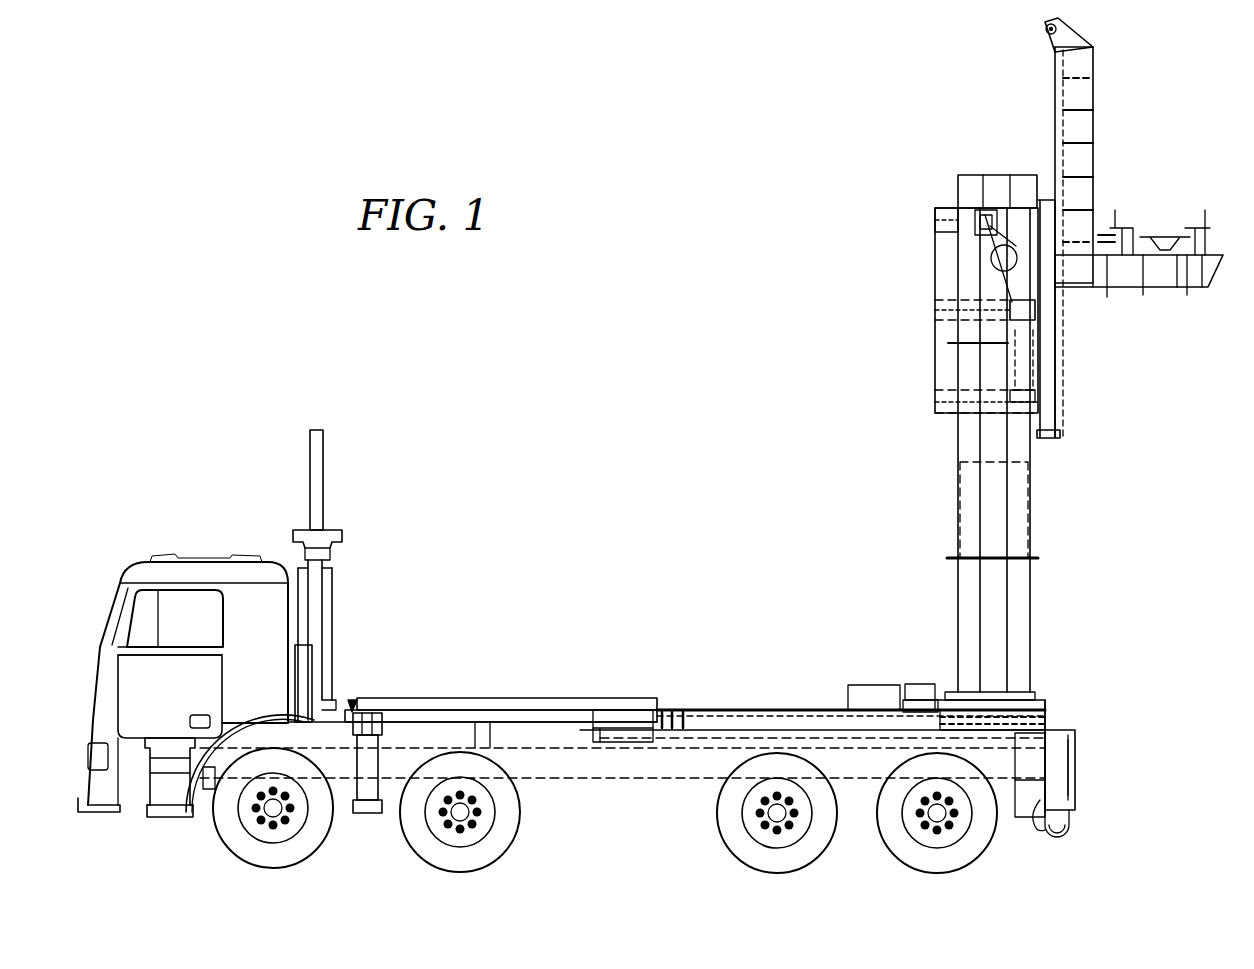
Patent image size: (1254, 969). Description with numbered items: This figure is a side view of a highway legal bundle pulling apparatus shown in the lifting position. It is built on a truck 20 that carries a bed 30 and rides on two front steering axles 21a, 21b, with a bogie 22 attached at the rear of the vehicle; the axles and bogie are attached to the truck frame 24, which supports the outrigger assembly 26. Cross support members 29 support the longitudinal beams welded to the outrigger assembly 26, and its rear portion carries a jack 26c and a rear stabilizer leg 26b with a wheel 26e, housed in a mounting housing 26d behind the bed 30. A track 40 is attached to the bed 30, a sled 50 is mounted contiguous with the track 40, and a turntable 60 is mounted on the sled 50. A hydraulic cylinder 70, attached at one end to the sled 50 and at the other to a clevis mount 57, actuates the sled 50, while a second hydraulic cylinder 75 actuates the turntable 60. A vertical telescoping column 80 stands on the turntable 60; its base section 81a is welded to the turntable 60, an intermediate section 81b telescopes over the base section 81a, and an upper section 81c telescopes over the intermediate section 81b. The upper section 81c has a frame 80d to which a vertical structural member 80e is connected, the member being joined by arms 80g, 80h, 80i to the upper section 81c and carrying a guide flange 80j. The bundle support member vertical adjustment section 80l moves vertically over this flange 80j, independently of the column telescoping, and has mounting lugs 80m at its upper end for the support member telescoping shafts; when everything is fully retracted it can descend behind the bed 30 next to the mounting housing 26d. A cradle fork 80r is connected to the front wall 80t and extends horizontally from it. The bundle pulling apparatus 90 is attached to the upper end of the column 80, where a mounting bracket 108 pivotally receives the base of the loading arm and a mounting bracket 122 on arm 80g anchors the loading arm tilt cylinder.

The truck 20 is at (192, 510).
The front steering axle 21a is at (258, 822).
The front steering axle 21b is at (468, 818).
The bogie 22 is at (835, 858).
The truck frame 24 is at (596, 784).
The outrigger assembly 26 is at (1080, 756).
The rear stabilizer leg 26b is at (1072, 832).
The jack 26c is at (1078, 788).
The mounting housing 26d is at (1036, 826).
The wheel 26e is at (1068, 838).
The cross support members 29 is at (835, 711).
The bed 30 is at (467, 696).
The track 40 is at (820, 706).
The sled 50 is at (1055, 720).
The clevis mount 57 is at (352, 702).
The turntable 60 is at (1050, 690).
The hydraulic cylinder 70 is at (508, 698).
The hydraulic cylinder 75 is at (880, 685).
The telescoping column 80 is at (1068, 556).
The frame 80d is at (940, 277).
The structural member 80e is at (1043, 200).
The arm 80g is at (937, 223).
The arm 80h is at (958, 313).
The arm 80i is at (935, 400).
The flange 80j is at (1042, 392).
The bundle support member vertical adjustment section 80l is at (1040, 108).
The mounting lugs 80m is at (1072, 34).
The cradle fork 80r is at (1093, 289).
The front wall 80t is at (1093, 215).
The base section 81a is at (958, 622).
The intermediate section 81b is at (958, 448).
The upper section 81c is at (972, 176).
The bundle pulling apparatus 90 is at (1132, 362).
The mounting bracket 108 is at (1058, 433).
The mounting bracket 122 is at (960, 258).